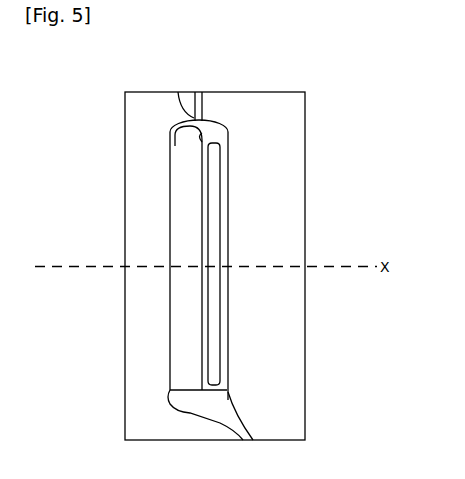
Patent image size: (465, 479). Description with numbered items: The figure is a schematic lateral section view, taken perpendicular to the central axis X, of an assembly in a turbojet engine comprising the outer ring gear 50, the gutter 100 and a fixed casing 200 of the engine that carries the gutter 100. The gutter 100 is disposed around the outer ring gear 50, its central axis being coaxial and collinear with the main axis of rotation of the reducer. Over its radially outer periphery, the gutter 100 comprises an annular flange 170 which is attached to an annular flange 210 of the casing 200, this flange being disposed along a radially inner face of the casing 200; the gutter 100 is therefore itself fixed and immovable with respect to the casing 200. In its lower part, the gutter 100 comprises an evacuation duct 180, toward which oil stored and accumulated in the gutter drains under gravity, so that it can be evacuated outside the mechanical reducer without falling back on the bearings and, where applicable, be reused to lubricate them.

The casing 200 is at (286, 92).
The gutter 100 is at (241, 134).
The outer ring gear 50 is at (216, 216).
The annular flange 210 is at (205, 96).
The annular flange 170 is at (180, 92).
The evacuation duct 180 is at (229, 408).